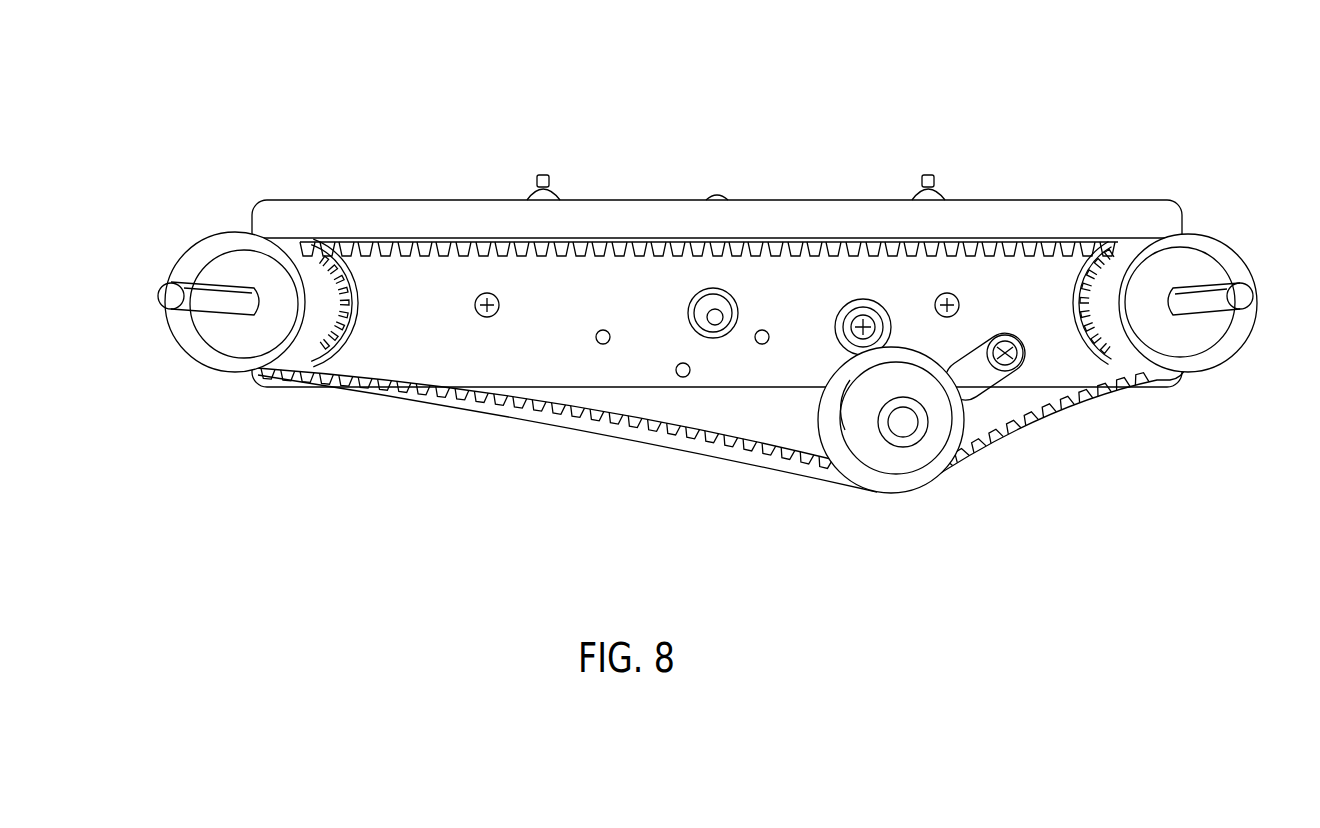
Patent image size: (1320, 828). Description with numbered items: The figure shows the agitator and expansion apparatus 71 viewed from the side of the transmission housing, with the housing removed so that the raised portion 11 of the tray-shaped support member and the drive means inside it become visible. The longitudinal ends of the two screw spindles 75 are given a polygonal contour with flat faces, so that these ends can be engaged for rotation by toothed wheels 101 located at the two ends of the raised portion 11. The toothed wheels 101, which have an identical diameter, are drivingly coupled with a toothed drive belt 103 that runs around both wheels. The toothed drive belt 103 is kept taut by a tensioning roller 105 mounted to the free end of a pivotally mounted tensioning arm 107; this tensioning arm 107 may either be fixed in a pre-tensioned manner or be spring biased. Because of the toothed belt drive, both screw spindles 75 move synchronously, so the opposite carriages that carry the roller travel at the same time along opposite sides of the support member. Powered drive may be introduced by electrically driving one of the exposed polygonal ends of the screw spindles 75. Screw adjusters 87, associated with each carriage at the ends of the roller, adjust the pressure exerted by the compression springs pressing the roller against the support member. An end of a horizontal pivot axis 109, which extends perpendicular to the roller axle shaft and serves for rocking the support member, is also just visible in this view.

The agitator and expansion apparatus 71 is at (719, 280).
The raised portion 11 is at (441, 329).
The toothed drive belt 103 is at (487, 242).
The toothed wheel 101 is at (227, 275).
The screw spindle 75 is at (205, 320).
The screw adjuster 87 is at (556, 190).
The horizontal pivot axis 109 is at (692, 327).
The tensioning arm 107 is at (968, 372).
The tensioning roller 105 is at (902, 452).